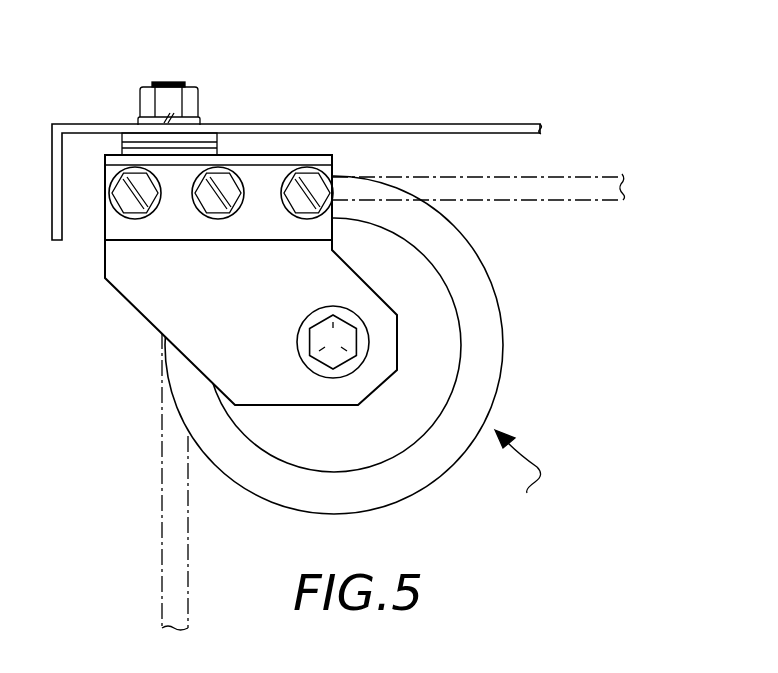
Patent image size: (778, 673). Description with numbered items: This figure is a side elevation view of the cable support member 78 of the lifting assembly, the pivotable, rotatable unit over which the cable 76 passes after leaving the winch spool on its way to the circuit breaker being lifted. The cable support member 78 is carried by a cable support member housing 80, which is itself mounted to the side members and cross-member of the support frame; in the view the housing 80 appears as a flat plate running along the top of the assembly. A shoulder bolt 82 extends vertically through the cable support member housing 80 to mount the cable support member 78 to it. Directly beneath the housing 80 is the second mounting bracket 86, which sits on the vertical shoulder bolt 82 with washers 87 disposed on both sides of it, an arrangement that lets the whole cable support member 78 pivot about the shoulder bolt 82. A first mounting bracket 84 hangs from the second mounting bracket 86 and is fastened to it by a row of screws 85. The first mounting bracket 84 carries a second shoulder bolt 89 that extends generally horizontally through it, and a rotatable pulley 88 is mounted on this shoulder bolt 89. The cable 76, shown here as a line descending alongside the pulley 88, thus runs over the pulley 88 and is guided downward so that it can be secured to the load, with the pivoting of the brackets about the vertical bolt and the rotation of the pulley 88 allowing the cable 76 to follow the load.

The cable 76 is at (162, 483).
The cable support member 78 is at (524, 480).
The cable support member housing 80 is at (331, 127).
The shoulder bolt 82 is at (168, 82).
The first mounting bracket 84 is at (122, 294).
The screws 85 is at (208, 210).
The second mounting bracket 86 is at (243, 160).
The washers 87 is at (122, 142).
The rotatable pulley 88 is at (490, 349).
The shoulder bolt 89 is at (297, 342).